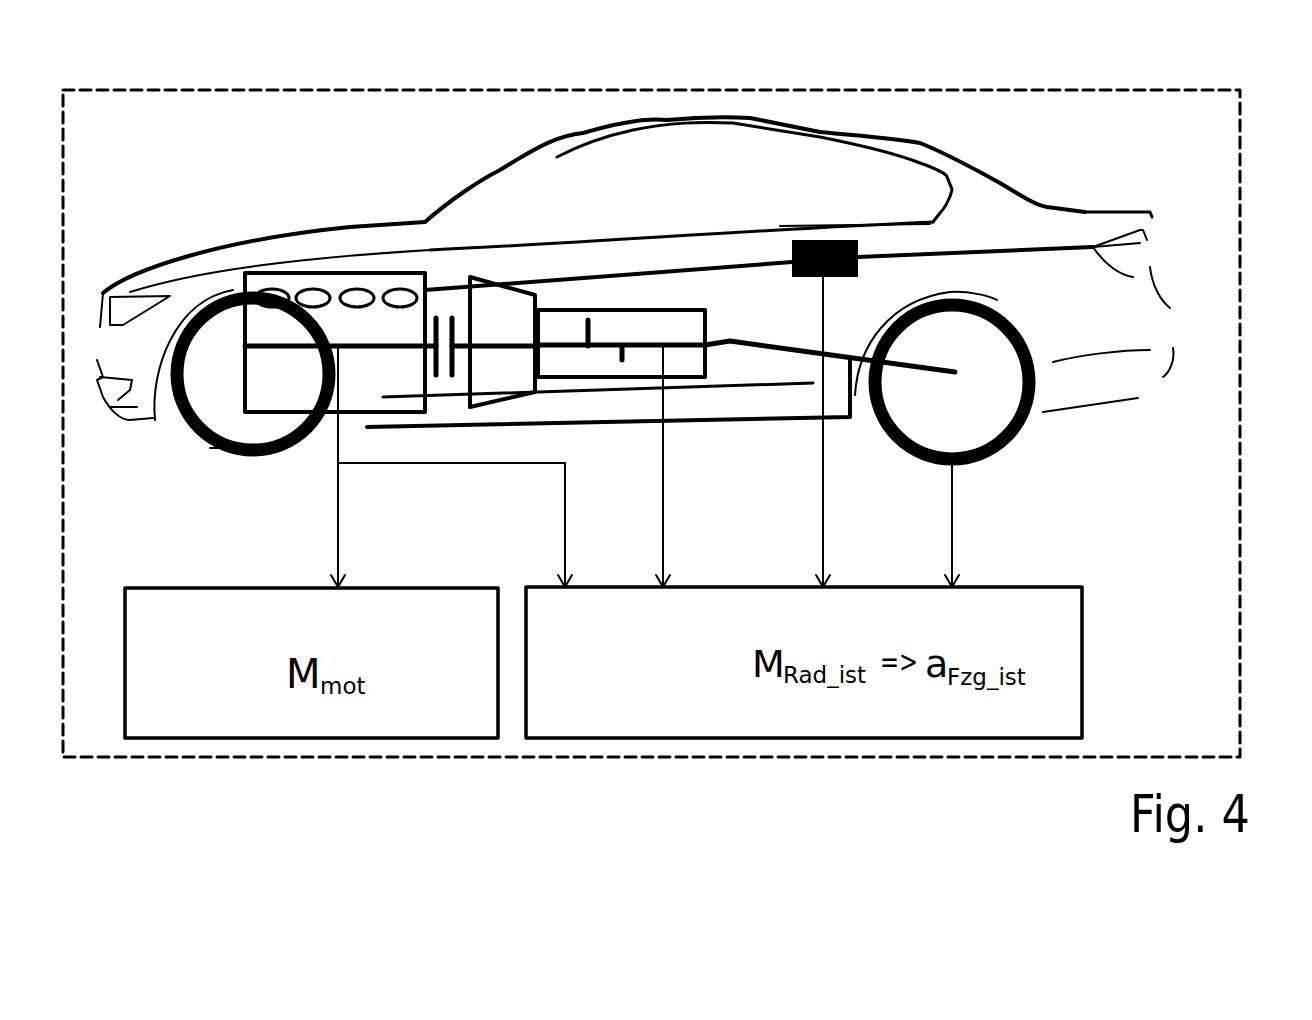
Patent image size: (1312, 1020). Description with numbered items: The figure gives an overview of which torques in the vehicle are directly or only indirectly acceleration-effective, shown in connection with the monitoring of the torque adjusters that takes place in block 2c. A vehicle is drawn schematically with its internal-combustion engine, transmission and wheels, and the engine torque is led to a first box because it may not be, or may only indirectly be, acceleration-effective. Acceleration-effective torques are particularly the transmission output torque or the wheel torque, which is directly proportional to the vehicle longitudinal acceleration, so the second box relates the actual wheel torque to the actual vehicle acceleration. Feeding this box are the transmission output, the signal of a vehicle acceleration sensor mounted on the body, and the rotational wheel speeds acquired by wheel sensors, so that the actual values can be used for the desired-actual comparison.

The block 2c is at (112, 90).